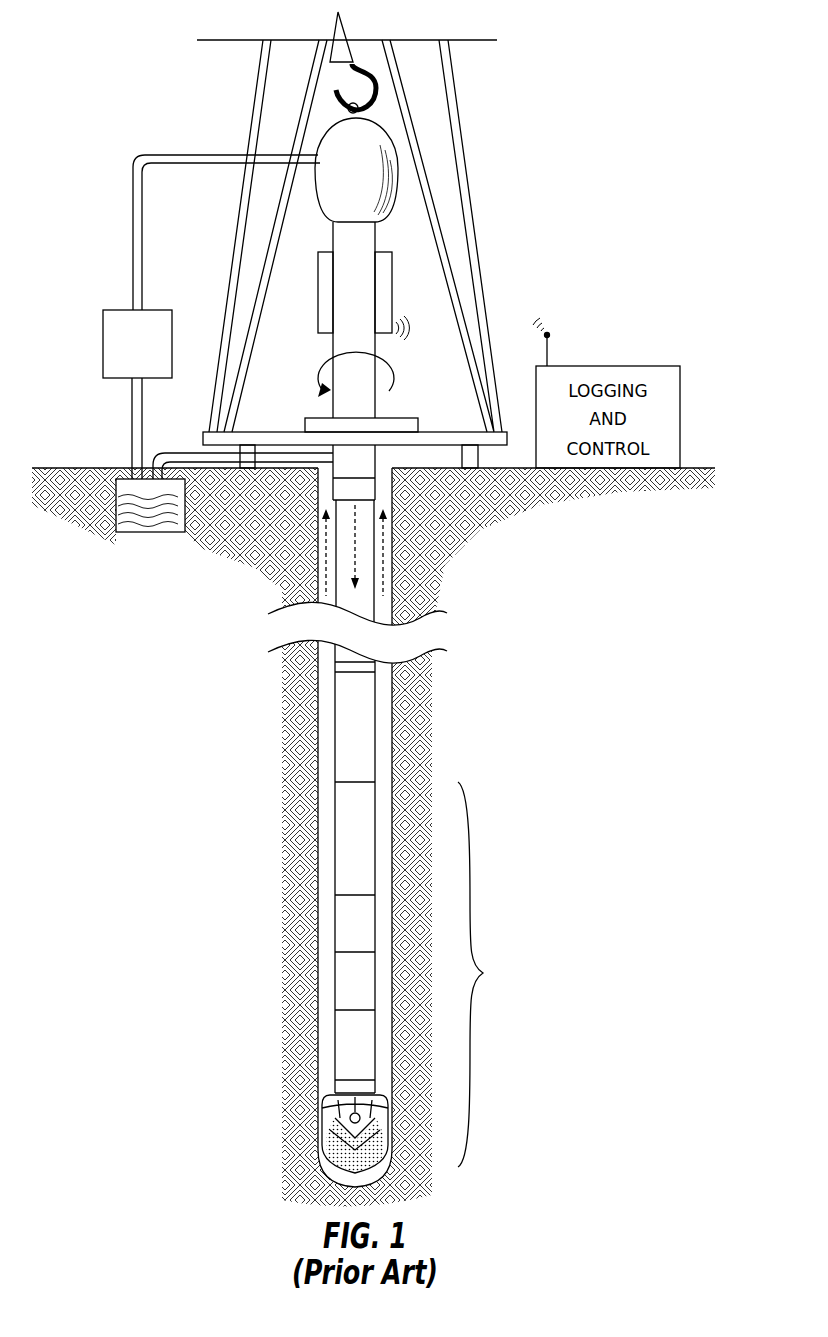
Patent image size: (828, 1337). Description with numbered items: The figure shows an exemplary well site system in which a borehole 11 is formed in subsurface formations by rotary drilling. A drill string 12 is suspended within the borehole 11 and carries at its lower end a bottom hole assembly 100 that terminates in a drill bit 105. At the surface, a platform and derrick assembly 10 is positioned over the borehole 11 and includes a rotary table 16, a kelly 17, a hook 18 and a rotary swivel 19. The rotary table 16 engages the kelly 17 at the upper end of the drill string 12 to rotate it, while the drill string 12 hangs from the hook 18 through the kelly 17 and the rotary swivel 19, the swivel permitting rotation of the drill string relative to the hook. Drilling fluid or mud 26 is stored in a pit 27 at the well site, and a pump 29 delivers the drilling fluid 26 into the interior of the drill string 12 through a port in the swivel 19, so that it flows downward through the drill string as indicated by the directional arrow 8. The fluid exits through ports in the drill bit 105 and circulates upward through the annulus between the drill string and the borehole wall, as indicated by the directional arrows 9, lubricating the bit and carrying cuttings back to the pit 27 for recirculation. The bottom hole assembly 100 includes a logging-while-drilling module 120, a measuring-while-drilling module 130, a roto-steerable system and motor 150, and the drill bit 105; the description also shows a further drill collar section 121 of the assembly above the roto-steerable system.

The platform and derrick assembly 10 is at (483, 128).
The hook 18 is at (350, 65).
The rotary swivel 19 is at (328, 200).
The kelly 17 is at (340, 410).
The rotary table 16 is at (400, 422).
The drill string 12 is at (352, 470).
The borehole 11 is at (388, 470).
The pump 29 is at (122, 380).
The pit 27 is at (123, 463).
The drilling fluid 26 is at (148, 525).
The directional arrows 9 is at (327, 537).
The directional arrow 8 is at (352, 555).
The logging-while-drilling (LWD) module 120 is at (342, 867).
The measuring-while-drilling (MWD) module 130 is at (342, 923).
The drill string section / tool 121 is at (342, 980).
The roto-steerable system and motor 150 is at (342, 1038).
The drill bit 105 is at (328, 1125).
The bottom hole assembly 100 is at (494, 974).